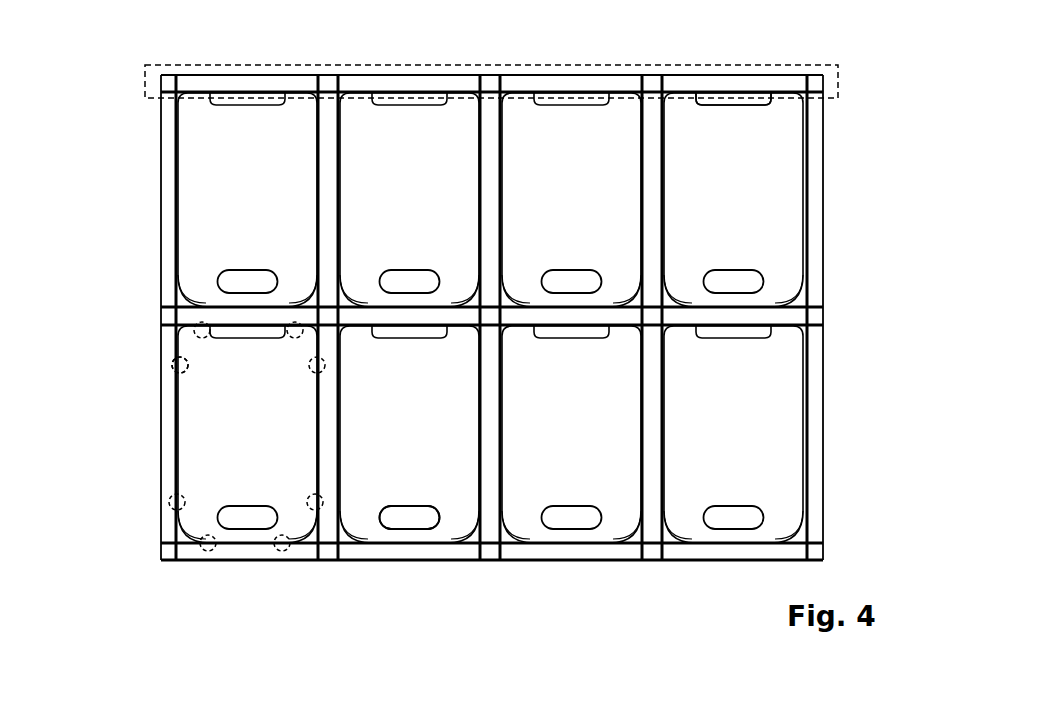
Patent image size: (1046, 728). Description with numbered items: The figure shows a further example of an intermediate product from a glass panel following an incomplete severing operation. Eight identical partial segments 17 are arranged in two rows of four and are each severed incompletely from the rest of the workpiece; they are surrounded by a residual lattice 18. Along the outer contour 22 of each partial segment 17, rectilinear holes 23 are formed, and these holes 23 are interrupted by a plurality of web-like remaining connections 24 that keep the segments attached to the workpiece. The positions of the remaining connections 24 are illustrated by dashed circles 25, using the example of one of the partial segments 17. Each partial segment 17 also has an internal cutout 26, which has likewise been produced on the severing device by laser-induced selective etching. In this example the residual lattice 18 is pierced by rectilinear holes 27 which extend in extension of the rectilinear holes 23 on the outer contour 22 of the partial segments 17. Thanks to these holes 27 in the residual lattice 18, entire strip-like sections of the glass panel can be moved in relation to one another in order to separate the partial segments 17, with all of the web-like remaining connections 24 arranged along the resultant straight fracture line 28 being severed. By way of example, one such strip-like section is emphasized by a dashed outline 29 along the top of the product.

The partial segments 17 is at (748, 444).
The residual lattice 18 is at (478, 331).
The outer contour 22 is at (176, 147).
The holes 23 is at (176, 195).
The web-like remaining connections 24 is at (173, 362).
The dashed circles 25 is at (168, 362).
The internal cutout 26 is at (412, 518).
The rectilinear holes 27 is at (174, 552).
The fracture line 28 is at (790, 93).
The dashed outline 29 is at (145, 80).